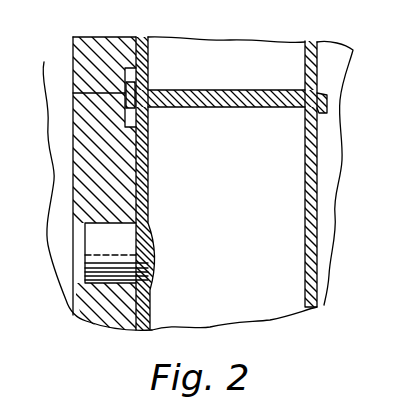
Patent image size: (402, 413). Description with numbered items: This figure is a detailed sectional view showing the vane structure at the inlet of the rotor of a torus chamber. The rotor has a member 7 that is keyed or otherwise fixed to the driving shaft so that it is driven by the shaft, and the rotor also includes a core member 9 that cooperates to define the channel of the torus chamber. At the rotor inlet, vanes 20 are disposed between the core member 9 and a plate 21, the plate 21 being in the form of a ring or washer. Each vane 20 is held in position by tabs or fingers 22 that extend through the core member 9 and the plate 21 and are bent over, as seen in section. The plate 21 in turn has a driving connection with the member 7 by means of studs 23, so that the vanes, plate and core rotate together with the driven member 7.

The rotor member 7 is at (93, 192).
The core member 9 is at (318, 135).
The vane 20 is at (210, 109).
The plate 21 is at (152, 39).
The tabs or fingers 22 is at (130, 89).
The studs 23 is at (107, 257).